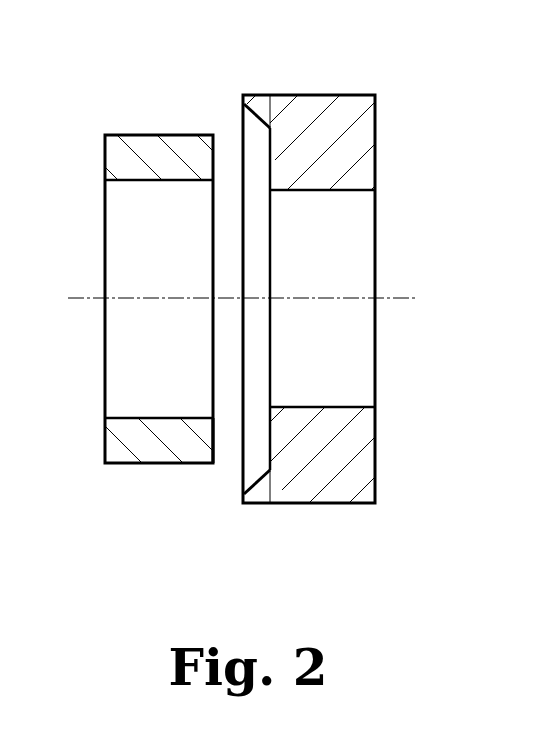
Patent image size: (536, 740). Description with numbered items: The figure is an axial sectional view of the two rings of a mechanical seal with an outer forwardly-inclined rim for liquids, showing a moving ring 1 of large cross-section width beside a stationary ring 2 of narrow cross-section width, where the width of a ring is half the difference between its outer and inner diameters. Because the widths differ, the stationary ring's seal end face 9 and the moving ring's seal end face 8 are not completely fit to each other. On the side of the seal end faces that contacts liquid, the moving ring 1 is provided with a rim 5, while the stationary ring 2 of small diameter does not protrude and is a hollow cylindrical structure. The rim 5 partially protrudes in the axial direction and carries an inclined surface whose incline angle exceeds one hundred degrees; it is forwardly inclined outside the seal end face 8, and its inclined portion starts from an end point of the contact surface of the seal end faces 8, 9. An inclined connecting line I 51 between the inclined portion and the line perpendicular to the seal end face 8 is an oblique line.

The moving ring 1 is at (327, 257).
The stationary ring 2 is at (148, 327).
The rim 5 is at (269, 71).
The inclined connecting line I 51 is at (275, 514).
The moving ring's seal end face 8 is at (198, 261).
The stationary ring's seal end face 9 is at (180, 469).